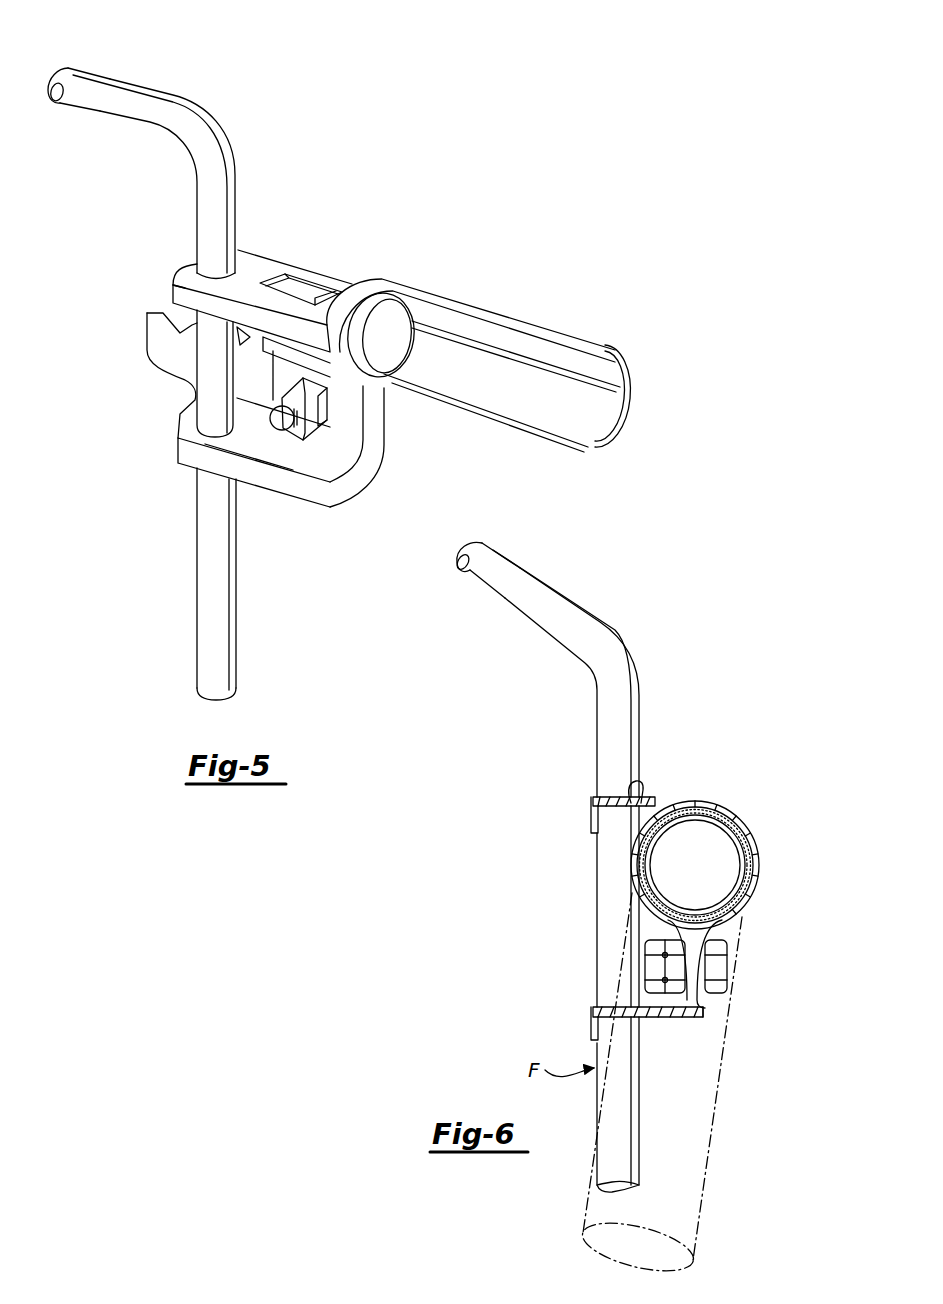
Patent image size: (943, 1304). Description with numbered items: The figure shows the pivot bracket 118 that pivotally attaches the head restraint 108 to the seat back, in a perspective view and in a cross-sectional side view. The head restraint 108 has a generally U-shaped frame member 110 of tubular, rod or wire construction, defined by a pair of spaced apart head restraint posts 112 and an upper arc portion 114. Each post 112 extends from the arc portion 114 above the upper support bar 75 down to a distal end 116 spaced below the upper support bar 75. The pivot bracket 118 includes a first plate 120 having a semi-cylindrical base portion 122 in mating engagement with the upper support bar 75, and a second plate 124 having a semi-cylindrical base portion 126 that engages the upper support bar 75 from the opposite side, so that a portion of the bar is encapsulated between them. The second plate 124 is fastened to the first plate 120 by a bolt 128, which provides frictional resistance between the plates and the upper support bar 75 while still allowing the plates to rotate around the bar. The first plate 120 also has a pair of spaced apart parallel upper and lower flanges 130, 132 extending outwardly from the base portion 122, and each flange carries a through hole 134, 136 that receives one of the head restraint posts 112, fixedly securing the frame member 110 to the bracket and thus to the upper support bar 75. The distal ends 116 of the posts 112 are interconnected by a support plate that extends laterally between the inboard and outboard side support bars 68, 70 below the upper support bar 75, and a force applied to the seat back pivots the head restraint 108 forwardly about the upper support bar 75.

In FIG. 6, the inboard side support bar 68 is at (696, 1086).
In FIG. 6, the outboard side support bar 70 is at (677, 1203).
In FIG. 5, the upper support bar 75 is at (400, 328).
In FIG. 6, the upper support bar 75 is at (735, 812).
In FIG. 6, the head restraint 108 is at (675, 653).
In FIG. 5, the frame member 110 is at (215, 127).
In FIG. 6, the frame member 110 is at (590, 667).
In FIG. 5, the head restraint post 112 is at (237, 587).
In FIG. 6, the head restraint post 112 is at (597, 967).
In FIG. 5, the upper arc portion 114 is at (92, 70).
In FIG. 6, the upper arc portion 114 is at (510, 553).
In FIG. 5, the distal end 116 is at (207, 702).
In FIG. 6, the distal end 116 is at (600, 1190).
In FIG. 5, the pivot bracket 118 is at (520, 331).
In FIG. 6, the pivot bracket 118 is at (685, 850).
In FIG. 5, the first plate 120 is at (283, 262).
In FIG. 6, the first plate 120 is at (660, 797).
In FIG. 5, the semi-cylindrical base portion 122 is at (608, 403).
In FIG. 6, the semi-cylindrical base portion 122 is at (763, 860).
In FIG. 5, the second plate 124 is at (357, 408).
In FIG. 6, the second plate 124 is at (700, 1013).
In FIG. 5, the semi-cylindrical base portion 126 is at (340, 330).
In FIG. 6, the semi-cylindrical base portion 126 is at (627, 877).
In FIG. 5, the bolt 128 is at (283, 430).
In FIG. 6, the bolt 128 is at (722, 960).
In FIG. 5, the upper flange 130 is at (186, 298).
In FIG. 6, the upper flange 130 is at (597, 797).
In FIG. 5, the lower flange 132 is at (185, 450).
In FIG. 6, the lower flange 132 is at (653, 1020).
In FIG. 5, the through hole 134 is at (213, 277).
In FIG. 5, the through hole 136 is at (183, 412).